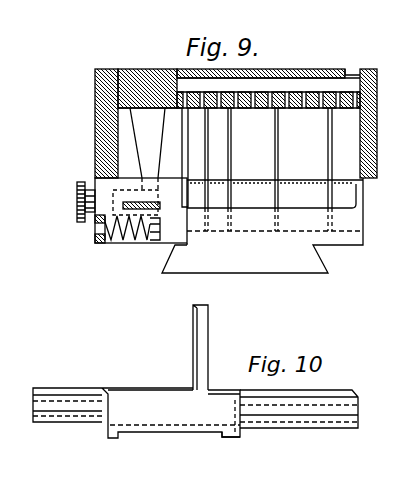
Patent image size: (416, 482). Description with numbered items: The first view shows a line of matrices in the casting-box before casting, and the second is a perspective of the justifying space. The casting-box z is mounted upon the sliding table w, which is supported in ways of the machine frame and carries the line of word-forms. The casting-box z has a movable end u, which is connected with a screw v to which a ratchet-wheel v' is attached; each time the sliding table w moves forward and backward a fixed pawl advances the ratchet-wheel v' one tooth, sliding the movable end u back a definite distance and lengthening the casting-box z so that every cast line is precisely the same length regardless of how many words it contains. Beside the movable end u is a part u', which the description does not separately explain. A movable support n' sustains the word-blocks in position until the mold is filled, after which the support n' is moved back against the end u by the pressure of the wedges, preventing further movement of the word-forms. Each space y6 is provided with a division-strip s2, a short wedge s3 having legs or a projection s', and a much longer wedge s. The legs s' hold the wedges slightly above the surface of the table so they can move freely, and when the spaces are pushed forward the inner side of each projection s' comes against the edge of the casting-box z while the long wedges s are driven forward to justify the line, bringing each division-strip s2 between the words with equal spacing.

In FIG. 9, the casting-box z is at (242, 123).
In FIG. 9, the sliding table w is at (262, 225).
In FIG. 9, the division-strip s2 is at (276, 158).
In FIG. 10, the division-strip s2 is at (209, 340).
In FIG. 9, the movable end u is at (173, 157).
In FIG. 9, the wedge piece guide u' is at (130, 143).
In FIG. 9, the movable support n' is at (141, 227).
In FIG. 9, the screw v is at (105, 244).
In FIG. 9, the ratchet-wheel v' is at (70, 205).
In FIG. 10, the wedge s3 is at (136, 413).
In FIG. 10, the space y6 is at (193, 362).
In FIG. 10, the wedge s is at (299, 418).
In FIG. 10, the legs s' is at (237, 445).